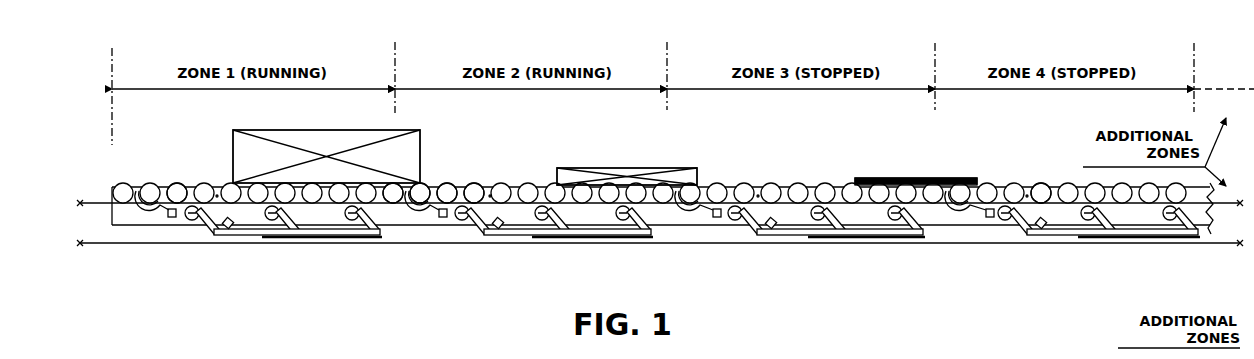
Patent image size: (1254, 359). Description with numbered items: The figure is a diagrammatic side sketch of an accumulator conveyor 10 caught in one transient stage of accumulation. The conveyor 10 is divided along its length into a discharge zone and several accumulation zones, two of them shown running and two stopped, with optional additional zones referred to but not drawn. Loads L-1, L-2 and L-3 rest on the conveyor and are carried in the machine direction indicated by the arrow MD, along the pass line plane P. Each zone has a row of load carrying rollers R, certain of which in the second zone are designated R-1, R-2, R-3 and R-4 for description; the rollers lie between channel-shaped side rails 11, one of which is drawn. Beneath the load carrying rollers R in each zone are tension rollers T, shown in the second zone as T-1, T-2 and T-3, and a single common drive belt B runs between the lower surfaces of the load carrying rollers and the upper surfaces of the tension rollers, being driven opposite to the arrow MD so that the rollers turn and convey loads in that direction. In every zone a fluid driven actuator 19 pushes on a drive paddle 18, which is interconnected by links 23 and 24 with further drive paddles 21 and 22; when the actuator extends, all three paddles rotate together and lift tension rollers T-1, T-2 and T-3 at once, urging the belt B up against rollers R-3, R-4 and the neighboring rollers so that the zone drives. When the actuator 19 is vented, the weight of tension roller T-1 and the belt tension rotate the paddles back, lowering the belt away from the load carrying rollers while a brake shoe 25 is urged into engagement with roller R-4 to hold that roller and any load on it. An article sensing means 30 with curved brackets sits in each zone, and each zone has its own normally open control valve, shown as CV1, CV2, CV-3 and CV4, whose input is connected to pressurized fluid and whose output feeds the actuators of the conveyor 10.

The conveyor 10 is at (768, 273).
The side rails 11 is at (788, 212).
The drive paddle 18 is at (213, 237).
The fluid driven actuator 19 is at (234, 240).
The drive paddle 21 is at (298, 238).
The drive paddle 22 is at (377, 238).
The link 23 is at (274, 238).
The link 24 is at (360, 238).
The brake shoe 25 is at (217, 188).
The article sensing means 30 is at (145, 178).
The drive belt B is at (1215, 244).
The pass line plane P is at (302, 180).
The load carrying rollers R is at (178, 183).
The load carrying roller R-1 is at (393, 184).
The load carrying roller R-2 is at (421, 185).
The load carrying roller R-3 is at (449, 185).
The load carrying roller R-4 is at (477, 185).
The tension rollers T is at (256, 238).
The tension roller T-1 is at (481, 240).
The tension roller T-2 is at (553, 240).
The tension roller T-3 is at (630, 240).
The load L-1 is at (355, 129).
The load L-2 is at (658, 166).
The load L-3 is at (932, 178).
The control valve CV1 is at (171, 218).
The control valve CV2 is at (443, 218).
The control valve CV-3 is at (716, 218).
The control valve CV4 is at (989, 218).
The machine direction arrow MD is at (720, 120).